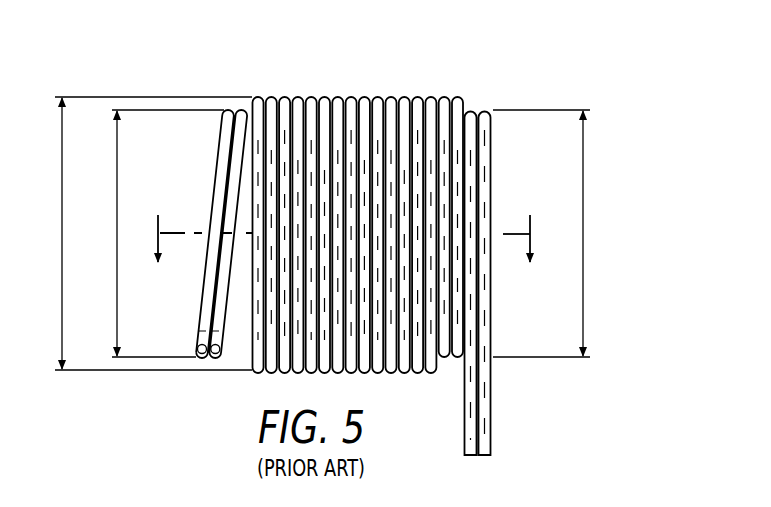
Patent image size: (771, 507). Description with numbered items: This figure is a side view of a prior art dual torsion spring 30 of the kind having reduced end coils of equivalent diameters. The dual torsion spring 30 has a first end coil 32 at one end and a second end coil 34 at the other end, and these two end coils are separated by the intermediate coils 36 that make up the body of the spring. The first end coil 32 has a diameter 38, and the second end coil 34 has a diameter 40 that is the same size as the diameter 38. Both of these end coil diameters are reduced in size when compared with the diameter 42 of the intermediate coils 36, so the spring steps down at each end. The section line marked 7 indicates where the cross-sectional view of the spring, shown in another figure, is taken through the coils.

The prior art spring 30 is at (556, 62).
The first end coil portion 32 is at (182, 387).
The second end portion with straight tail 34 is at (517, 376).
The main helical coils 36 is at (373, 88).
The height of first end coils 38 is at (117, 243).
The height of second end coils 40 is at (583, 244).
The height of main coils 42 is at (62, 200).
The section line 7- 7 is at (344, 229).